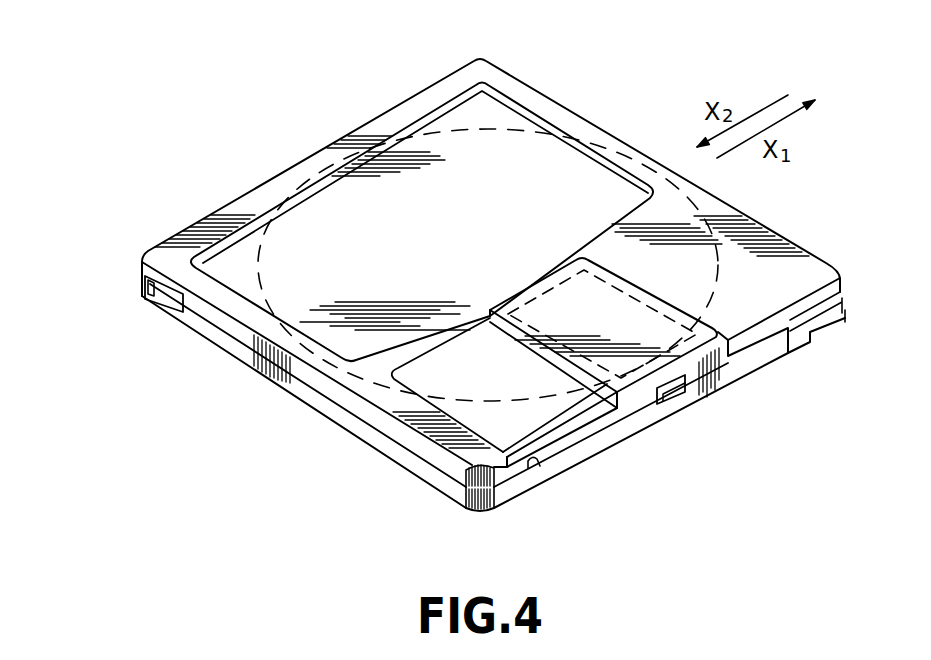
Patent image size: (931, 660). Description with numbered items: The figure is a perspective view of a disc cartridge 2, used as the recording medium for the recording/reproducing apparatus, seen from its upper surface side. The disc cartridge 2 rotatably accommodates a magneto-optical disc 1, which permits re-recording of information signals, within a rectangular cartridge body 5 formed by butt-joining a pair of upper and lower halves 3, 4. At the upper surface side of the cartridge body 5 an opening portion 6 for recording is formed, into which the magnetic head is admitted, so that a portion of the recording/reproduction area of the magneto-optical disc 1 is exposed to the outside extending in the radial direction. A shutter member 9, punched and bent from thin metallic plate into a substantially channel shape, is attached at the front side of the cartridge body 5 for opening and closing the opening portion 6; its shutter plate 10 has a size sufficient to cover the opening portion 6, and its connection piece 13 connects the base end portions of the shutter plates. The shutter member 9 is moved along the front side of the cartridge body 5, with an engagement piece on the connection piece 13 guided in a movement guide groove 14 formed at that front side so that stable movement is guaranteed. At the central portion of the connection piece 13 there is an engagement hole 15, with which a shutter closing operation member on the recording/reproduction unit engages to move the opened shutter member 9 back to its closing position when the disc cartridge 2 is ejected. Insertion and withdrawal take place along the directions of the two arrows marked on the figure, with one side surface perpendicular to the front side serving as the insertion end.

The magneto-optical disc 1 is at (522, 130).
The disc cartridge 2 is at (632, 136).
The upper half 3 is at (138, 266).
The lower half 4 is at (122, 300).
The cartridge body 5 is at (112, 279).
The opening portion for recording 6 is at (530, 303).
The shutter member 9 is at (722, 372).
The shutter plate 10 is at (622, 302).
The connection piece 13 is at (646, 423).
The movement guide groove 14 is at (538, 458).
The engagement hole 15 is at (674, 392).